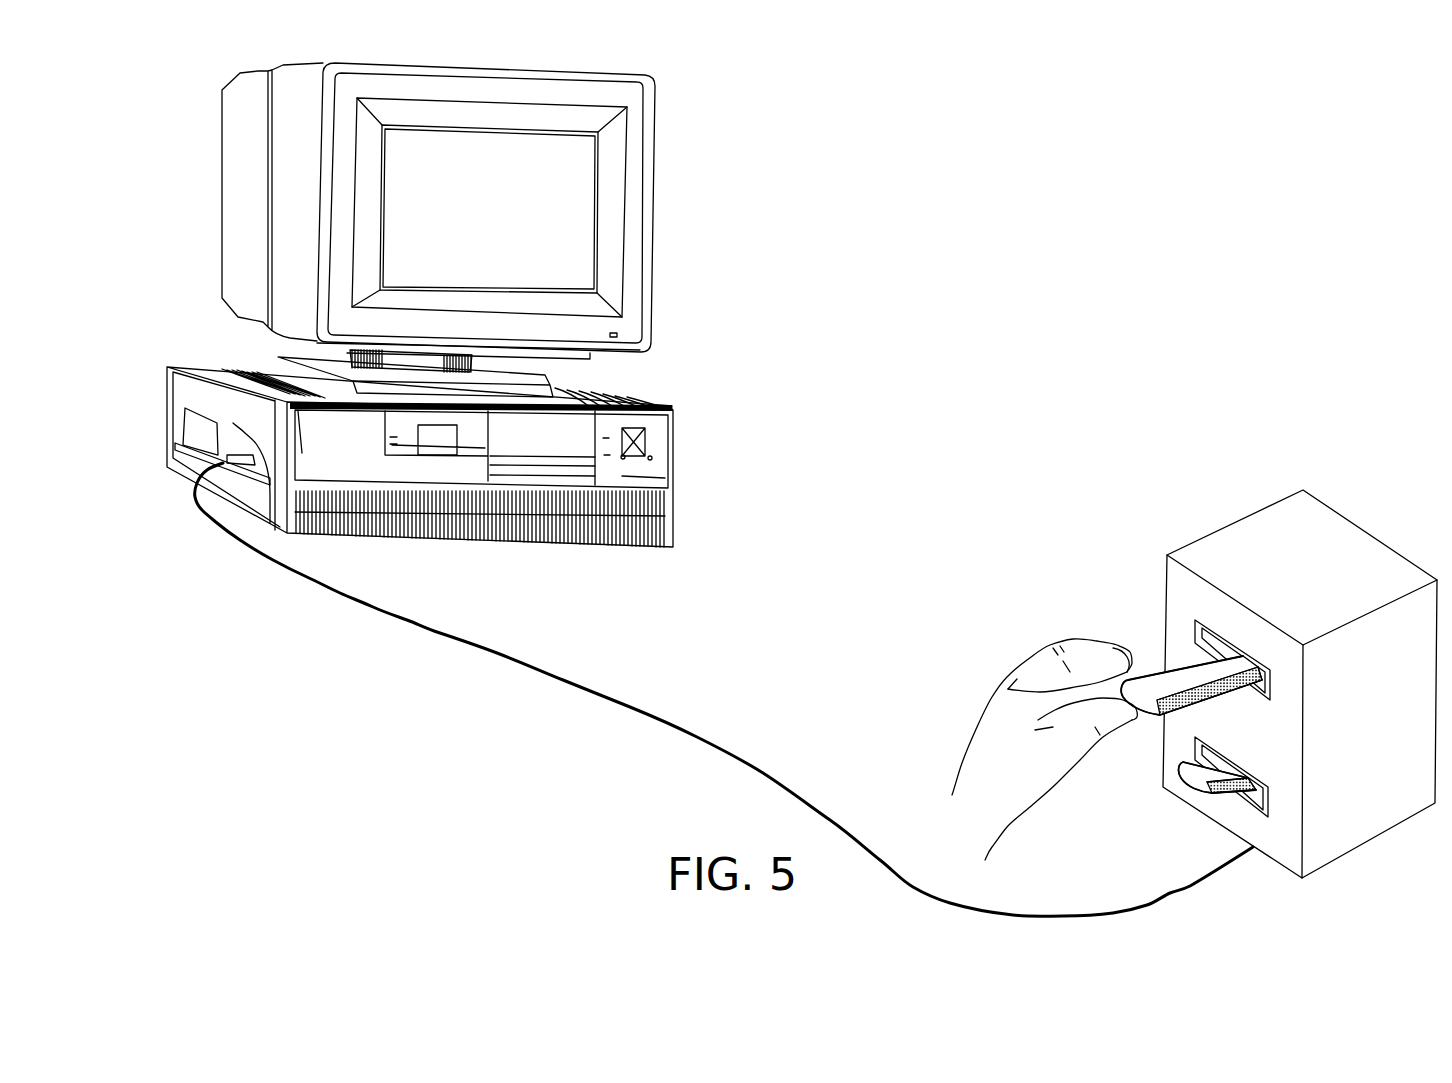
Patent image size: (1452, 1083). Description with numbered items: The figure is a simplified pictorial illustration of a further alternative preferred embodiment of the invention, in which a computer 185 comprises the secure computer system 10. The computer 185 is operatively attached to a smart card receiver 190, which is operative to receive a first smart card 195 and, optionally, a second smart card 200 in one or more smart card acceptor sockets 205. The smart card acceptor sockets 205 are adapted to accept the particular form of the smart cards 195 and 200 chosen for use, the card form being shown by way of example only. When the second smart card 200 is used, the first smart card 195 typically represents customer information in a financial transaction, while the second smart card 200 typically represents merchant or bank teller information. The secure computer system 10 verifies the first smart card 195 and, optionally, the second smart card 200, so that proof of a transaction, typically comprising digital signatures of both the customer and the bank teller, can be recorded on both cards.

The secure computer system 10 is at (249, 460).
The computer 185 is at (700, 308).
The smart card receiver 190 is at (1277, 513).
The first smart card 195 is at (1173, 670).
The second smart card 200 is at (1202, 768).
The smart card acceptor sockets 205 is at (1268, 687).